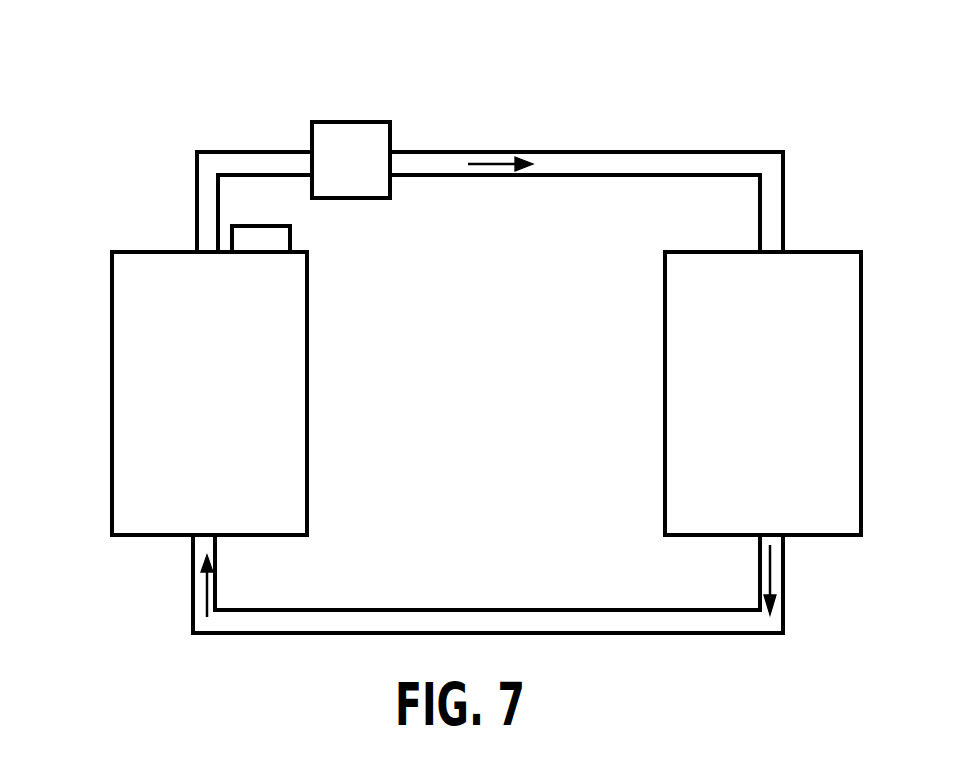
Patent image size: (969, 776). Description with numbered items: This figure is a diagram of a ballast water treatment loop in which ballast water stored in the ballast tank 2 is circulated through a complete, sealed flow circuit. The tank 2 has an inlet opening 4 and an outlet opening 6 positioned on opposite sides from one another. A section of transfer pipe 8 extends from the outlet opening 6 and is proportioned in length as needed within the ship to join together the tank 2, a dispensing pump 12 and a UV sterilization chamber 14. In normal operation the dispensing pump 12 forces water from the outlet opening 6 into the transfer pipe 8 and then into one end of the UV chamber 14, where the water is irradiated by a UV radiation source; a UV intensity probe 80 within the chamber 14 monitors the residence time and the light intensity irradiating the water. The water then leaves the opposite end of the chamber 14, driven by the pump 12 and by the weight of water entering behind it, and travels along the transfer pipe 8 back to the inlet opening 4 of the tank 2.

The ballast tank 2 is at (833, 340).
The inlet opening 4 is at (768, 250).
The outlet opening 6 is at (775, 542).
The transfer pipe 8 is at (580, 160).
The dispensing pump 12 is at (345, 137).
The UV sterilization chamber 14 is at (130, 333).
The UV intensity probe 80 is at (262, 224).